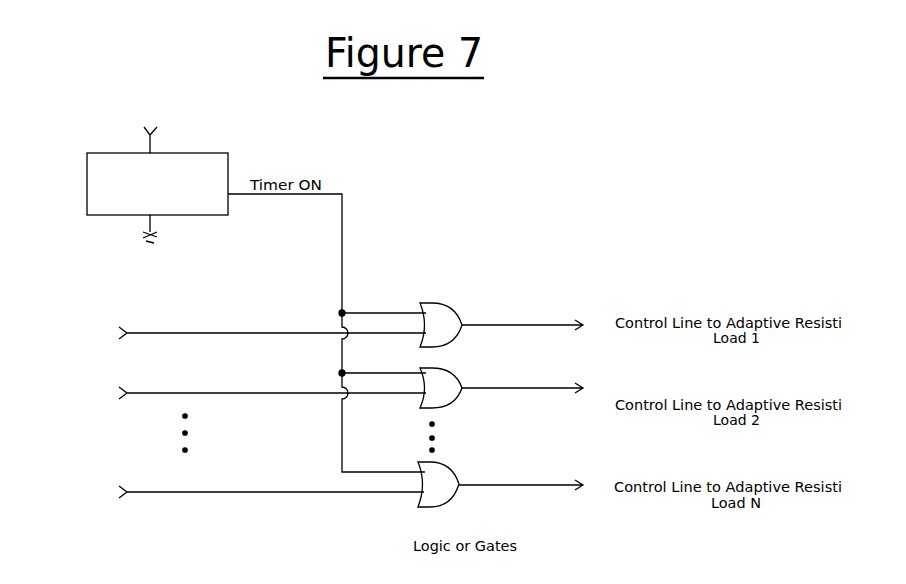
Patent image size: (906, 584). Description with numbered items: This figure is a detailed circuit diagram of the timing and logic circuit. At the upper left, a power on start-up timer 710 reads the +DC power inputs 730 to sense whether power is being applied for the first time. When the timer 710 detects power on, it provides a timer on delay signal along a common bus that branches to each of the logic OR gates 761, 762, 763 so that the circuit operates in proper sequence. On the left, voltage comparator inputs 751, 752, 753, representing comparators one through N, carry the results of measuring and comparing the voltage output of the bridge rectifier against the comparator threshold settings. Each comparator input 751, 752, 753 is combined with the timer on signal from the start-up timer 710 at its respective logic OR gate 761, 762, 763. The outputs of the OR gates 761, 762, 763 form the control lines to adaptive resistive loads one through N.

The power on start-up timer 710 is at (157, 198).
The +DC power inputs 730 is at (145, 132).
The voltage comparator input 751 is at (224, 326).
The voltage comparator input 752 is at (224, 391).
The voltage comparator input 753 is at (222, 490).
The logic OR gate 761 is at (501, 325).
The logic OR gate 762 is at (501, 388).
The logic OR gate 763 is at (500, 484).